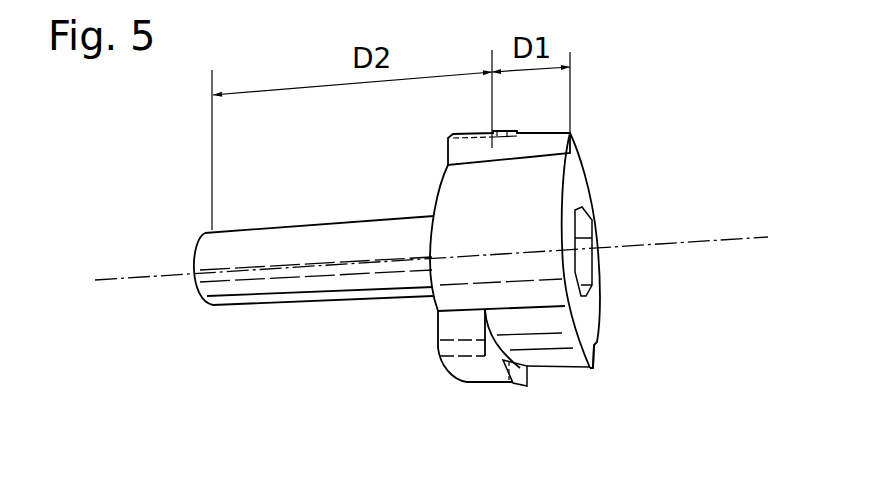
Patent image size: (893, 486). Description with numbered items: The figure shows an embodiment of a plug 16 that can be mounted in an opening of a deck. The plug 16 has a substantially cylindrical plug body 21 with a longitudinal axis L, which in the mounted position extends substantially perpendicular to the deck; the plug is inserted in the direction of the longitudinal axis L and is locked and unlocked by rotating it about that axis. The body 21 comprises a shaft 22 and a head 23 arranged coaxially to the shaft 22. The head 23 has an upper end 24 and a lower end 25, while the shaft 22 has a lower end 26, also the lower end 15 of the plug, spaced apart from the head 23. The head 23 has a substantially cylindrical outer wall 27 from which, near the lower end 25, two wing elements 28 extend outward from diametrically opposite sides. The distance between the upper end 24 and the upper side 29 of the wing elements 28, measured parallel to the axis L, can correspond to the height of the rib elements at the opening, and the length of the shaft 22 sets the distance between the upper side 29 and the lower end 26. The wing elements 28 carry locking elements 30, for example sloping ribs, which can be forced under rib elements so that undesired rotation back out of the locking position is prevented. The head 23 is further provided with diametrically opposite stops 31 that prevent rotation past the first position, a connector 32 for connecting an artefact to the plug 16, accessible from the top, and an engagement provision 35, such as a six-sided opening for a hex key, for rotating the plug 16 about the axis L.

The lower end of plug 15 is at (178, 238).
The plug 16 is at (308, 333).
The plug body 21 is at (403, 314).
The shaft 22 is at (252, 290).
The head 23 is at (606, 333).
The upper end of head 24 is at (563, 172).
The lower end of head 25 is at (437, 183).
The lower end of shaft 26 is at (190, 308).
The outer wall 27 is at (533, 228).
The wing elements 28 is at (470, 144).
The upper side of wing elements 29 is at (493, 348).
The locking elements 30 is at (518, 375).
The stops 31 is at (557, 147).
The connector 32 is at (638, 266).
The engagement provision 35 is at (603, 283).
The longitudinal axis L is at (127, 277).